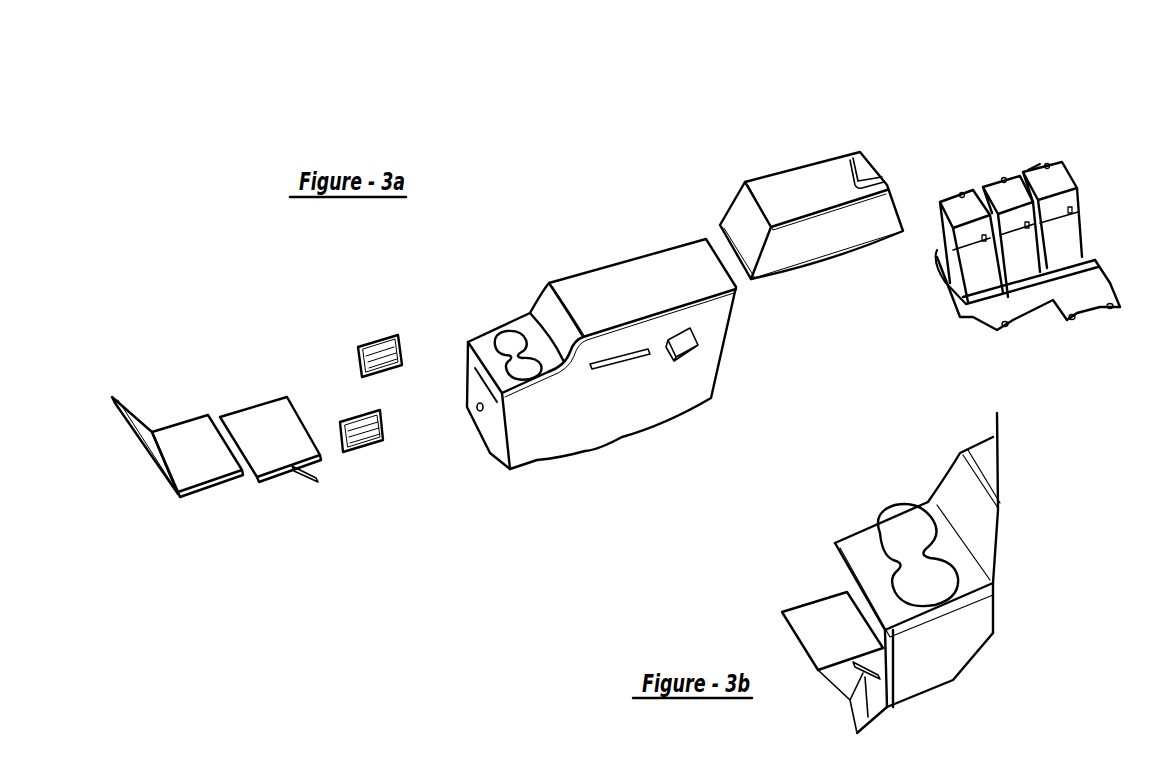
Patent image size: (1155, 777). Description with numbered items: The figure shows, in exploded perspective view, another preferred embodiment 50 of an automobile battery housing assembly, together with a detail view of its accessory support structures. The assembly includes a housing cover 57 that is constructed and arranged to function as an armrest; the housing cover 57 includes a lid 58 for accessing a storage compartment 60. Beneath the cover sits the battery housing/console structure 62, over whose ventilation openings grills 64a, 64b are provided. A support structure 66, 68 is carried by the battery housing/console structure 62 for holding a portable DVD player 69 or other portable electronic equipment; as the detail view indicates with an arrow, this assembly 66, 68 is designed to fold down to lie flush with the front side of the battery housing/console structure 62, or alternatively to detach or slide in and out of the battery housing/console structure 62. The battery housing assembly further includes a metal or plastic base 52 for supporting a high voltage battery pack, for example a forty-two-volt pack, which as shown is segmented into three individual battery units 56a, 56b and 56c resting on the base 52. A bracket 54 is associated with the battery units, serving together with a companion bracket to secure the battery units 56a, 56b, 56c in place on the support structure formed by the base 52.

In FIG. 3A, the battery housing assembly embodiment 50 is at (861, 88).
In FIG. 3A, the base 52 is at (1085, 297).
In FIG. 3A, the bracket 54 is at (1035, 162).
In FIG. 3A, the battery unit 56a is at (1083, 242).
In FIG. 3A, the battery unit 56b is at (992, 213).
In FIG. 3A, the battery unit 56c is at (953, 287).
In FIG. 3A, the housing cover 57 is at (790, 132).
In FIG. 3A, the lid 58 is at (775, 187).
In FIG. 3A, the storage compartment 60 is at (788, 257).
In FIG. 3A, the battery housing/console structure 62 is at (607, 273).
In FIG. 3B, the battery housing/console structure 62 is at (833, 543).
In FIG. 3A, the grill 64a is at (375, 333).
In FIG. 3A, the grill 64b is at (358, 448).
In FIG. 3A, the support structure assembly 66 is at (300, 477).
In FIG. 3B, the support structure assembly 66 is at (790, 662).
In FIG. 3A, the support structure assembly 68 is at (233, 410).
In FIG. 3B, the support structure assembly 68 is at (790, 633).
In FIG. 3A, the portable DVD player 69 is at (177, 500).